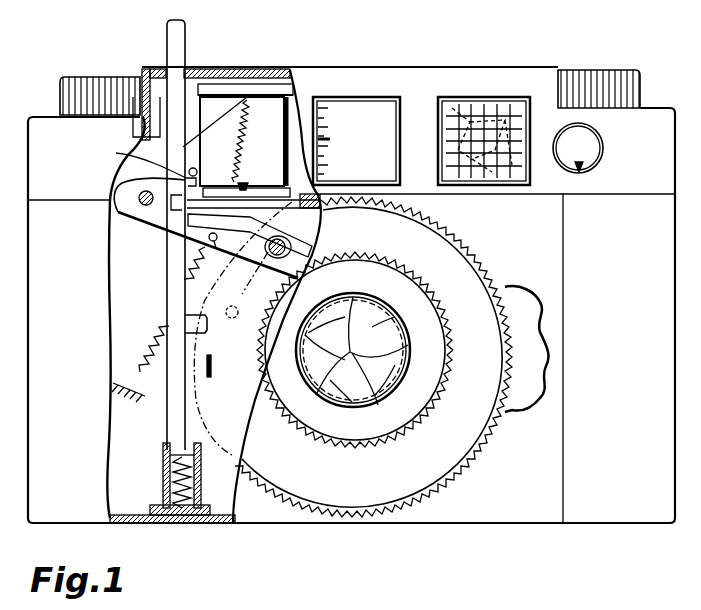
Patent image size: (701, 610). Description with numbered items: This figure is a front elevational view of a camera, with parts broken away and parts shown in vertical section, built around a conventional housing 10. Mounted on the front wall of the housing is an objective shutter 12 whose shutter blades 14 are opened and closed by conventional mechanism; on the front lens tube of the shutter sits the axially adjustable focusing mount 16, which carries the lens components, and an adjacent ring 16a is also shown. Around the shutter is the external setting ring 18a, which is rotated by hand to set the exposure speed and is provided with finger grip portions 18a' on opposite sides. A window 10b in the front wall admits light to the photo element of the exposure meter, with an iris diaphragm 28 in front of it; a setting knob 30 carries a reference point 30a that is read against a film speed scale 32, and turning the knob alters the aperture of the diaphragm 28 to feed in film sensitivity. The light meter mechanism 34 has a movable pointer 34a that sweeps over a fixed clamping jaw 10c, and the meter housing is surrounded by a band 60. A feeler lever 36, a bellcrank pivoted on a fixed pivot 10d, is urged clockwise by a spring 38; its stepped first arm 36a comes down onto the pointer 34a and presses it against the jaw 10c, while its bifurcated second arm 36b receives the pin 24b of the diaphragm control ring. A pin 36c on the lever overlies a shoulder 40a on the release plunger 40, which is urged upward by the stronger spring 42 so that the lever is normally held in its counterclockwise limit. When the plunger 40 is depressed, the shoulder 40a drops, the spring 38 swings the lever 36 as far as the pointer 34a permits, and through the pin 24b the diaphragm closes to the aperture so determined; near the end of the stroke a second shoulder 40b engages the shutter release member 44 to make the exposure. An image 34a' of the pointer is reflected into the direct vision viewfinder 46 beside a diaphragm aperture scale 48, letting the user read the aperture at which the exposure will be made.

The housing 10 is at (461, 517).
The window 10b is at (450, 100).
The fixed clamping jaw 10c is at (258, 152).
The fixed pivot 10d is at (139, 196).
The objective shutter 12 is at (472, 250).
The shutter blades 14 is at (382, 327).
The focusing mount 16 is at (450, 335).
The lens mount ring 16a is at (388, 400).
The external setting ring 18a is at (382, 357).
The finger grip portions 18a' is at (528, 374).
The pin 24b is at (277, 258).
The iris diaphragm 28 is at (497, 130).
The setting knob 30 is at (595, 138).
The reference point 30a is at (583, 160).
The film speed scale 32 is at (597, 183).
The light meter mechanism 34 is at (255, 108).
The movable pointer 34a is at (255, 141).
The image of the pointer 34a' is at (351, 153).
The feeler lever 36 is at (135, 212).
The stepped detector cam portion 36a is at (238, 148).
The bifurcated arm 36b is at (303, 268).
The pin 36c is at (194, 167).
The spring 38 is at (138, 371).
The release plunger 40 is at (165, 40).
The shoulder 40a is at (116, 153).
The second shoulder 40b is at (211, 330).
The spring 42 is at (163, 480).
The shutter release member 44 is at (214, 366).
The direct vision viewfinder 46 is at (375, 108).
The diaphragm aperture scale 48 is at (330, 108).
The band 60 is at (222, 90).